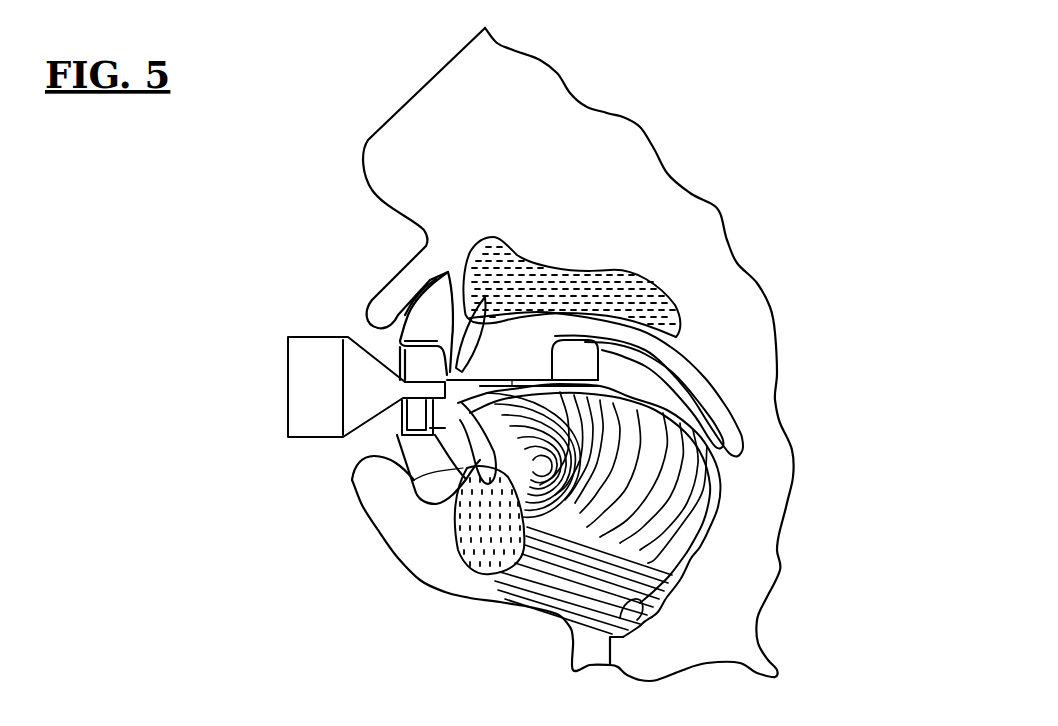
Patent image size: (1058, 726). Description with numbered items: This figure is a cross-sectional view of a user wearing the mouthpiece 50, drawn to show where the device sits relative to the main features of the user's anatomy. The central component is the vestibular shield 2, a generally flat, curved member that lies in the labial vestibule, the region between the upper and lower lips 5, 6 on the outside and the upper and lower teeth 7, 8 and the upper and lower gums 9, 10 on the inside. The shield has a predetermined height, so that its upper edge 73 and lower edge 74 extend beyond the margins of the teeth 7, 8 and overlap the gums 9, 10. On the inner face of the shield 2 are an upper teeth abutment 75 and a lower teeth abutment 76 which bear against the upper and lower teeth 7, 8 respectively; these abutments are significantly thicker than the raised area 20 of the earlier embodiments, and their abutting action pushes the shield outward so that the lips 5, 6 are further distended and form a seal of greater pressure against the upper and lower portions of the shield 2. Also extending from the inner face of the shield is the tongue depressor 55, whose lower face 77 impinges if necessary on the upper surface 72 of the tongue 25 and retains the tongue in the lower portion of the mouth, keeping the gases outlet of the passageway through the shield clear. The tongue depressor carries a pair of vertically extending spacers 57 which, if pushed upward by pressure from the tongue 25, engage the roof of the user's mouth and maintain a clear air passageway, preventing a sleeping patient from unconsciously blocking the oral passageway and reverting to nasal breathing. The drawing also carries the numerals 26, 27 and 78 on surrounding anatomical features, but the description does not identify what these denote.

The vestibular shield 2 is at (382, 454).
The upper lip 5 is at (367, 308).
The lower lip 6 is at (350, 475).
The upper teeth 7 is at (447, 272).
The lower teeth 8 is at (532, 442).
The upper gums 9 is at (426, 290).
The lower gums 10 is at (463, 468).
The raised area 20 is at (450, 375).
The tongue 25 is at (656, 462).
The soft palate 26 is at (694, 373).
The palate 27 is at (677, 303).
The mouthpiece 50 is at (258, 386).
The tongue depressor 55 is at (512, 382).
The vertically extending spacers 57 is at (590, 358).
The upper surface of the tongue 72 is at (601, 380).
The upper edge of the vestibular shield 73 is at (400, 462).
The lower edge of the vestibular shield 74 is at (400, 310).
The upper teeth abutment 75 is at (399, 345).
The lower teeth abutment 76 is at (398, 440).
The lower face of the tongue depressor 77 is at (552, 380).
The turbinate 78 is at (600, 312).